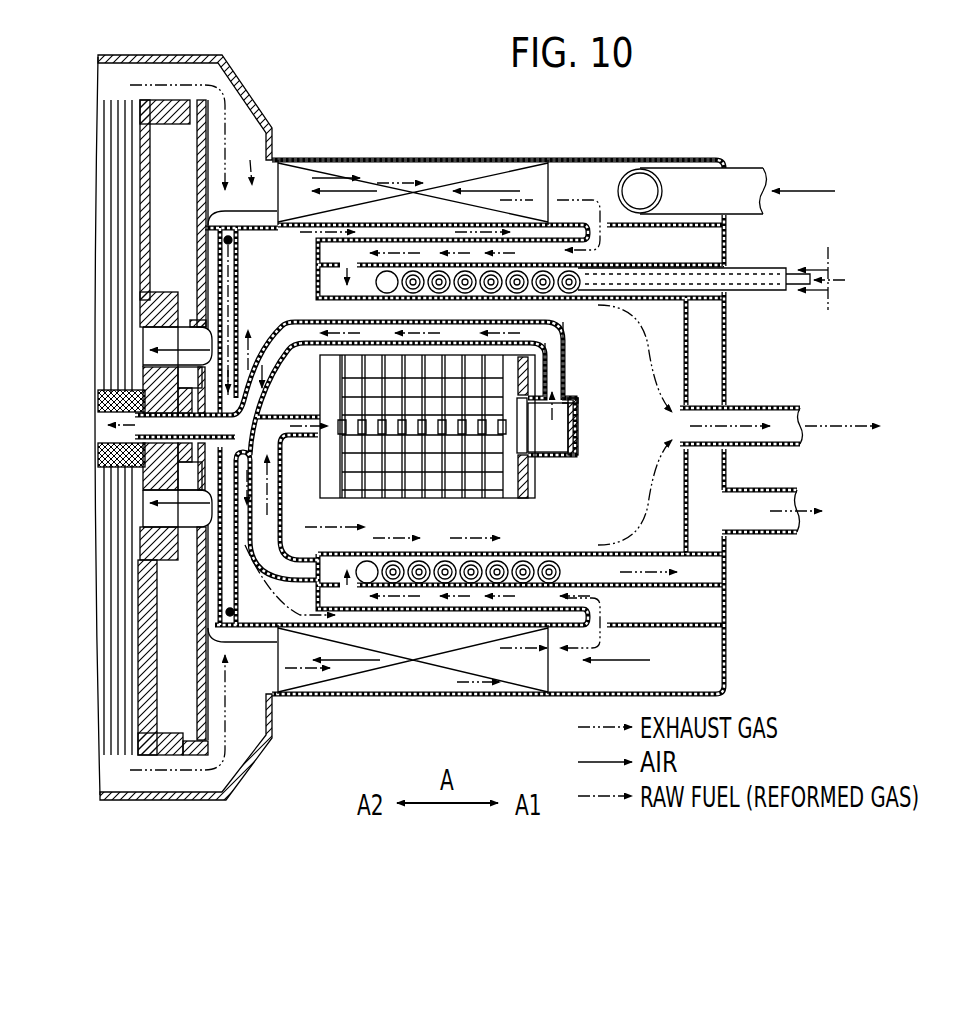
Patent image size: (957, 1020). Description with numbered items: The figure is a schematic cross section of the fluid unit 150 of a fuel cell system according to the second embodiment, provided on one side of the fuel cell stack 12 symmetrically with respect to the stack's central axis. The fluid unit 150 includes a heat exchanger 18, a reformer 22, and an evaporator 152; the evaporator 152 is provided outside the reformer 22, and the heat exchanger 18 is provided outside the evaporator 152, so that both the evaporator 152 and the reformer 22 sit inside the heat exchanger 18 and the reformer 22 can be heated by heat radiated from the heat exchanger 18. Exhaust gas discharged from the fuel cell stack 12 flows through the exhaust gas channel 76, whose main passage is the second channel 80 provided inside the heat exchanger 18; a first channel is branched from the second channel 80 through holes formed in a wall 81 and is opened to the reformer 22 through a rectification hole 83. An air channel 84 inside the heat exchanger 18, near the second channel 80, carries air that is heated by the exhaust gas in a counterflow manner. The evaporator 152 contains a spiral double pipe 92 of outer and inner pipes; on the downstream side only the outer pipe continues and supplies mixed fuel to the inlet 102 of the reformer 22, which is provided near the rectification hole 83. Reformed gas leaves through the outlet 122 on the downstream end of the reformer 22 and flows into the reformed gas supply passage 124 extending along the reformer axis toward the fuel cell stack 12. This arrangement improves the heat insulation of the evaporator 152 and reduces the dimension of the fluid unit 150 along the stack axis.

The fuel cell stack 12 is at (113, 95).
The heat exchanger 18 is at (440, 158).
The reformer 22 is at (415, 503).
The exhaust gas channel 76 is at (252, 180).
The second channel 80 is at (412, 158).
The wall 81 is at (222, 542).
The rectification hole 83 is at (237, 427).
The air channel 84 is at (497, 190).
The double pipe 92 is at (505, 557).
The inlet 102 is at (318, 437).
The outlet 122 is at (565, 431).
The reformed gas supply passage 124 is at (563, 376).
The fluid unit 150 is at (814, 109).
The evaporator 152 is at (528, 258).